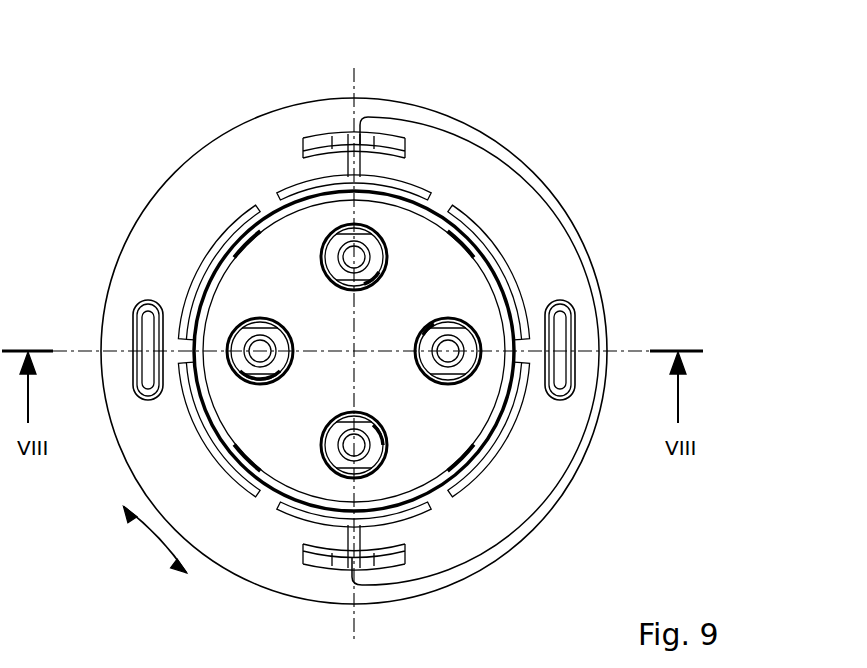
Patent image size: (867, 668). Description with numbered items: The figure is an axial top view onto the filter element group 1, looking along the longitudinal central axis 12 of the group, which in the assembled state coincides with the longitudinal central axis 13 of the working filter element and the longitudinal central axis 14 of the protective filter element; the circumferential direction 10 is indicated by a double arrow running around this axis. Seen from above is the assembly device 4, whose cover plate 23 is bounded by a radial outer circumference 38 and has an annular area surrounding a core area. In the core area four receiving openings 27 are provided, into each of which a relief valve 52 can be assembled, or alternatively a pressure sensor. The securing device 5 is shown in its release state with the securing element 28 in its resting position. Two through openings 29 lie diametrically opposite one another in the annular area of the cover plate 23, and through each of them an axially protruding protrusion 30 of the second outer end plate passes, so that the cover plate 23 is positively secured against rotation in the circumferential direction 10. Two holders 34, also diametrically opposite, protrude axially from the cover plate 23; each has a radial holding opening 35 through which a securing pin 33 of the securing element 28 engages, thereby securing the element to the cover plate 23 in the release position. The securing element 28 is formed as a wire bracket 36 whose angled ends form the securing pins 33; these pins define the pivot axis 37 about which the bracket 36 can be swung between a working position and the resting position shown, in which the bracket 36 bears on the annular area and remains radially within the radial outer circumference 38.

The filter element group 1 is at (672, 173).
The assembly device 4 is at (155, 190).
The securing device 5 is at (498, 146).
The circumferential direction 10 is at (148, 547).
The longitudinal central axis 12 is at (362, 362).
The longitudinal central axis 13 is at (354, 351).
The longitudinal central axis 14 is at (354, 351).
The cover plate 23 is at (131, 224).
The receiving opening 27 is at (265, 427).
The securing element 28 is at (545, 210).
The through opening 29 is at (560, 362).
The protrusion 30 is at (560, 330).
The securing pin 33 is at (348, 547).
The holder 34 is at (318, 570).
The holding opening 35 is at (338, 575).
The bracket 36 is at (565, 272).
The pivot axis 37 is at (358, 75).
The radial outer circumference 38 is at (187, 155).
The relief valve 52 is at (343, 430).